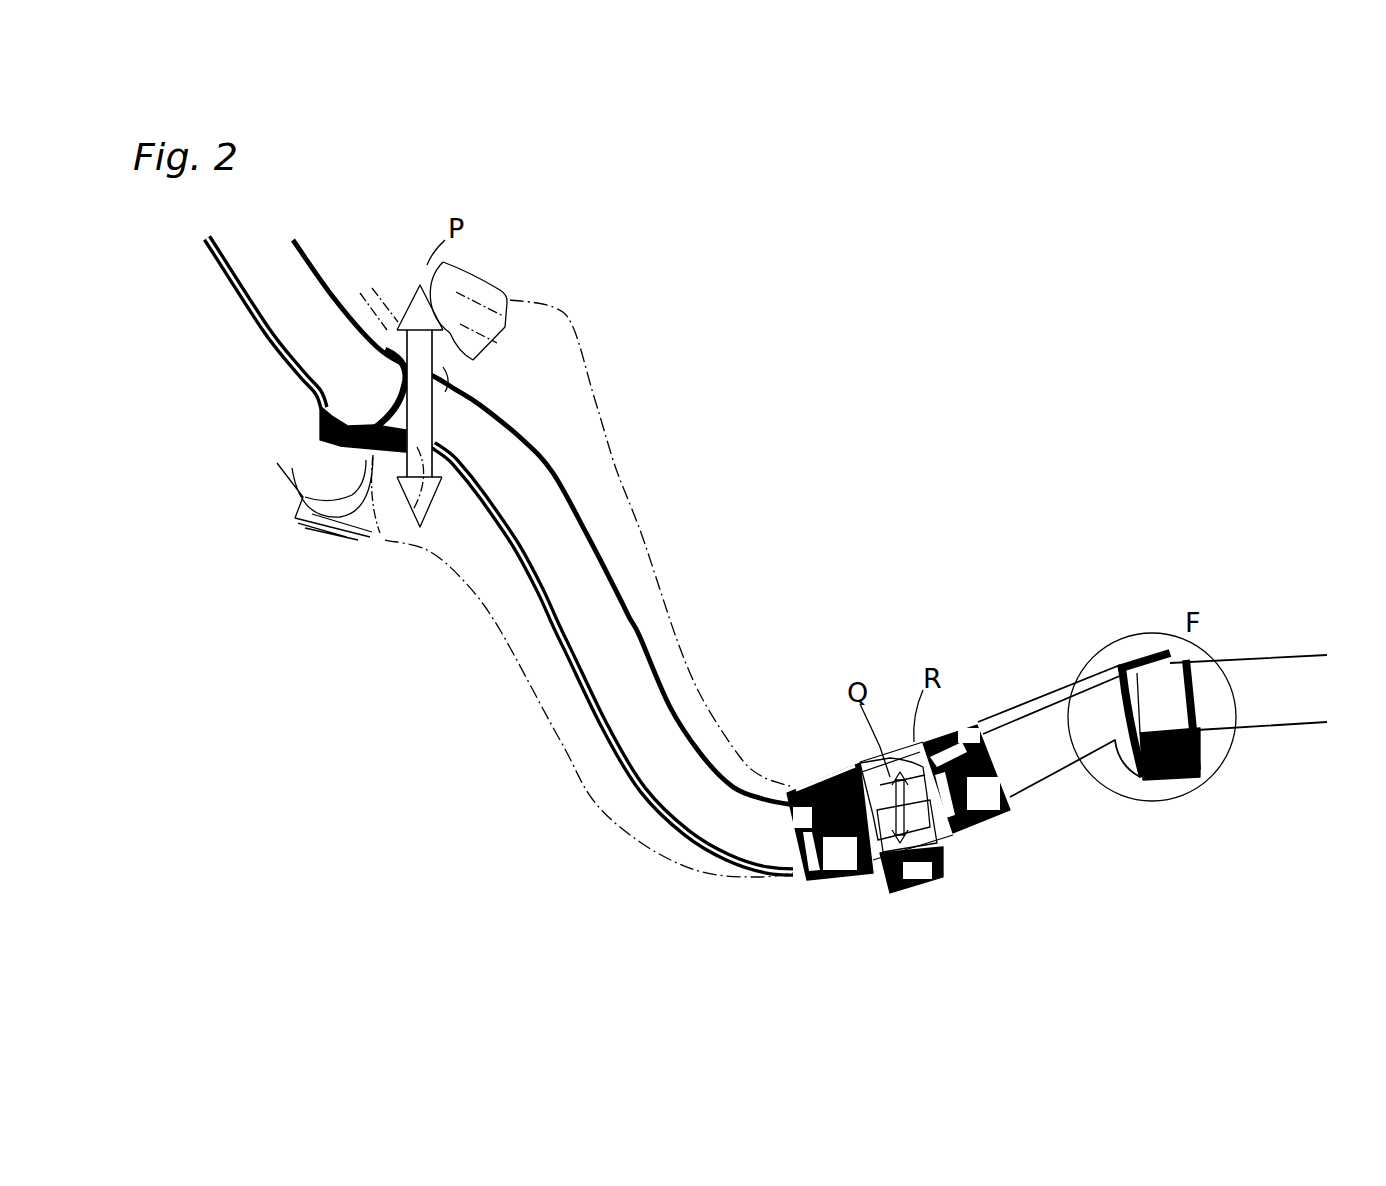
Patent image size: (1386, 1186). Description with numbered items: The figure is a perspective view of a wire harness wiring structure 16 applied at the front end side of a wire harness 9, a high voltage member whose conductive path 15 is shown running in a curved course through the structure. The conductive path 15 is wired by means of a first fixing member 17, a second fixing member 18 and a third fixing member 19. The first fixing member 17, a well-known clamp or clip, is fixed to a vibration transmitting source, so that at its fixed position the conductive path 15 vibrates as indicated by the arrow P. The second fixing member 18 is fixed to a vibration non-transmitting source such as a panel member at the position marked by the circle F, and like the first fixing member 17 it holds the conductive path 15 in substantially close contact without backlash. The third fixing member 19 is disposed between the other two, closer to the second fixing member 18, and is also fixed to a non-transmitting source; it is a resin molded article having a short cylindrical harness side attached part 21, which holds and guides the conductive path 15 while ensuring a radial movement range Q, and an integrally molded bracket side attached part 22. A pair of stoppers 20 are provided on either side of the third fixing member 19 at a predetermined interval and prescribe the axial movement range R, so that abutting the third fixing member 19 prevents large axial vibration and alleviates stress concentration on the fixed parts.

The wire harness 9 is at (592, 536).
The conductive path 15 is at (627, 712).
The wire harness wiring structure 16 is at (900, 471).
The first fixing member 17 is at (395, 427).
The second fixing member 18 is at (1170, 718).
The third fixing member 19 is at (927, 830).
The stoppers 20 is at (840, 853).
The harness side attached part 21 is at (860, 777).
The bracket side attached part 22 is at (873, 857).